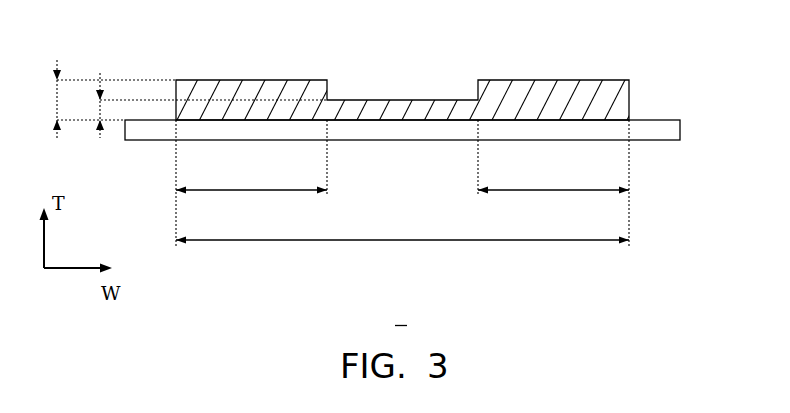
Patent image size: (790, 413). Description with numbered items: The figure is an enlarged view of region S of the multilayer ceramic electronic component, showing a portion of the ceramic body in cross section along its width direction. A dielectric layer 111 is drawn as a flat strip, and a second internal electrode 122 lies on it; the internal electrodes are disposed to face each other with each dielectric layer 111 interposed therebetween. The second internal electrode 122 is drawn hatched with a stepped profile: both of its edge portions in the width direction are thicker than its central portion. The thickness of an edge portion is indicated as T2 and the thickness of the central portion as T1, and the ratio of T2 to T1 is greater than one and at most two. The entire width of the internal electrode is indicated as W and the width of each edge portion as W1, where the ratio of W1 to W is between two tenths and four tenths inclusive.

The dielectric layer 111 is at (667, 129).
The second internal electrode 122 is at (433, 107).
The thickness of the central portion T1 is at (86, 105).
The thickness of the edge portion T2 is at (41, 99).
The width of the edge portion W1 is at (402, 179).
The entire width of the internal electrode W is at (402, 230).
The region S is at (401, 316).